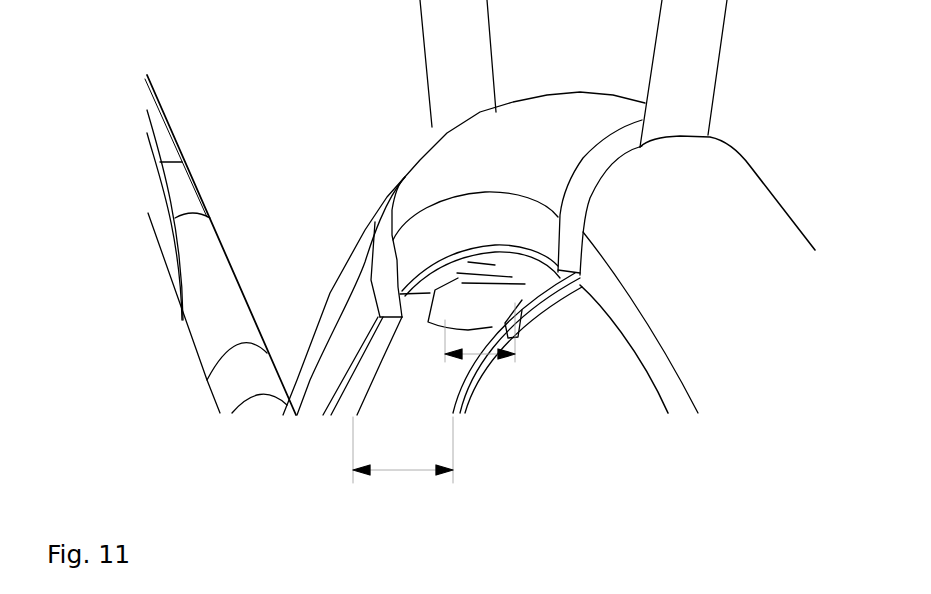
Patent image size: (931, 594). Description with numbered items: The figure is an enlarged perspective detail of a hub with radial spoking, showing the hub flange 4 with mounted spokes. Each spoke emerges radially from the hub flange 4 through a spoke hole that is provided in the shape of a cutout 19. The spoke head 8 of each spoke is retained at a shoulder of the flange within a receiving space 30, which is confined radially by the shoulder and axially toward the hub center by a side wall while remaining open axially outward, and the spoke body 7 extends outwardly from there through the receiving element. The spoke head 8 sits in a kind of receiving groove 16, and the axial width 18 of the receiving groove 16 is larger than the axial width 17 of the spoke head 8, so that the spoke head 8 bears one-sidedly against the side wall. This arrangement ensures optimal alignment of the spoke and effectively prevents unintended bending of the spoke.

The hub flange 4 is at (733, 167).
The spoke body 7 is at (170, 132).
The spoke head 8 is at (478, 297).
The receiving groove 16 is at (428, 388).
The axial width of the spoke head 17 is at (470, 388).
The axial width of the receiving groove 18 is at (418, 477).
The cutout 19 is at (390, 295).
The receiving space 30 is at (403, 365).